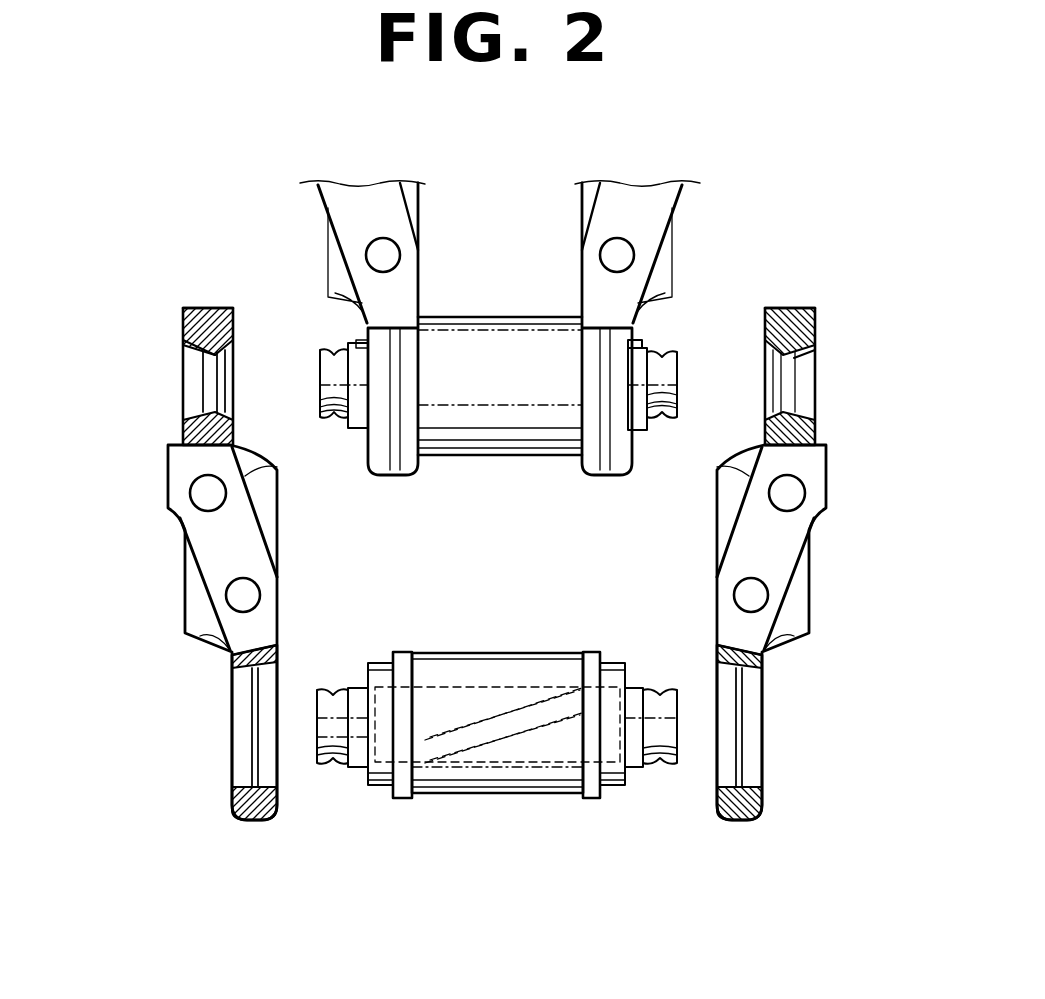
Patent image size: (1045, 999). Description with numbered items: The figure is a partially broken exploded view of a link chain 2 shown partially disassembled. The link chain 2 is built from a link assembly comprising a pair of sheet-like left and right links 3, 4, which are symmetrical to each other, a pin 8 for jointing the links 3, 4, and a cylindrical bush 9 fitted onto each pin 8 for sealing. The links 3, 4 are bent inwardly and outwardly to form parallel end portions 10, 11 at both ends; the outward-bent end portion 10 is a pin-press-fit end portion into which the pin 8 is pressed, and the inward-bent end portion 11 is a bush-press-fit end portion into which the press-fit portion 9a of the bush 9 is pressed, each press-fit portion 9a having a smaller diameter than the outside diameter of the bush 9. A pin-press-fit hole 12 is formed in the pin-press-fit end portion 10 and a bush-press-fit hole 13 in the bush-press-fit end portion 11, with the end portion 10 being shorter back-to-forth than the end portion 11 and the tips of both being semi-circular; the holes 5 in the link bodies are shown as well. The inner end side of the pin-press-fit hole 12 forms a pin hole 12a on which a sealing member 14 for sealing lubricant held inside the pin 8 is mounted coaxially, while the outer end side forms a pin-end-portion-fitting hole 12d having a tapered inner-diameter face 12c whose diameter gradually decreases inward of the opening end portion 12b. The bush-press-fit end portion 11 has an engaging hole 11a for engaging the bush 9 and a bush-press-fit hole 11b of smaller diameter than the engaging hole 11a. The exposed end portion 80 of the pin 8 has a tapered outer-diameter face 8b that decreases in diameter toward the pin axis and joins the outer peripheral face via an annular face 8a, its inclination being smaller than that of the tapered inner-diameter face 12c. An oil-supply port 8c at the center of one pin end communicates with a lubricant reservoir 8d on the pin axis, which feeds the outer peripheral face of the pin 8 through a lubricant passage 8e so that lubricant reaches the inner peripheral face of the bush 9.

The link chain 2 is at (884, 293).
The left link 3 is at (165, 618).
The right link 4 is at (823, 628).
The mounting hole 5 is at (195, 493).
The pin 8 is at (640, 770).
The annular face 8a is at (667, 428).
The tapered outer-diameter face 8b is at (340, 410).
The oil-supply port 8c is at (318, 730).
The lubricant reservoir 8d is at (495, 752).
The lubricant passage 8e is at (490, 713).
The cylindrical bush 9 is at (492, 335).
The press-fit portion 9a is at (378, 790).
The pin-press-fit end portion 10 is at (205, 308).
The bush-press-fit end portion 11 is at (240, 802).
The engaging hole 11a is at (265, 673).
The bush-press-fit hole 11b is at (240, 705).
The pin-press-fit hole 12 is at (143, 425).
The pin hole 12a is at (225, 360).
The opening end portion 12b is at (200, 395).
The tapered inner-diameter face 12c is at (183, 340).
The pin-end-portion-fitting hole 12d is at (210, 395).
The bush-press-fit hole 13 is at (213, 757).
The sealing member 14 is at (645, 338).
The exposed end portion 80 is at (660, 395).